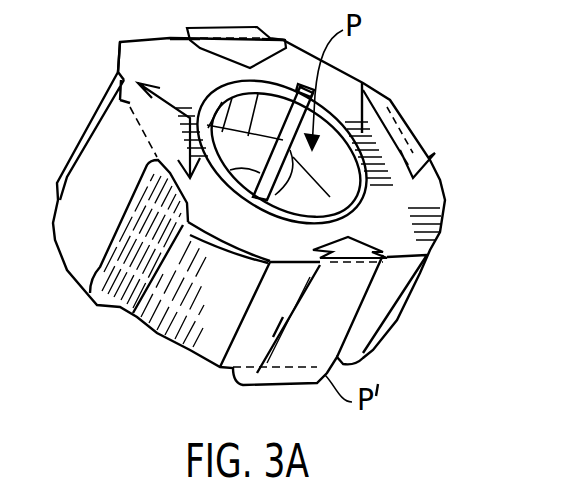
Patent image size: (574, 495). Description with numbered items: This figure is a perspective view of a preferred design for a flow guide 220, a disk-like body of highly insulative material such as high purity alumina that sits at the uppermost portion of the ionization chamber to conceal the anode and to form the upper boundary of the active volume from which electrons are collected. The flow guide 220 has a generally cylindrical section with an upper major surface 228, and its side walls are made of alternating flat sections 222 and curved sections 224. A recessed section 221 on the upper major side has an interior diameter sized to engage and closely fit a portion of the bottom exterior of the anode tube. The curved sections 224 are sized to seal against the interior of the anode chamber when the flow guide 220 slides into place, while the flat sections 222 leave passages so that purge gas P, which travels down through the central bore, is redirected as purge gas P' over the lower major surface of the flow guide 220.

The flow guide 220 is at (432, 99).
The recessed section 221 is at (300, 118).
The flat sections 222 is at (367, 320).
The curved sections 224 is at (160, 333).
The upper major surface 228 is at (140, 70).